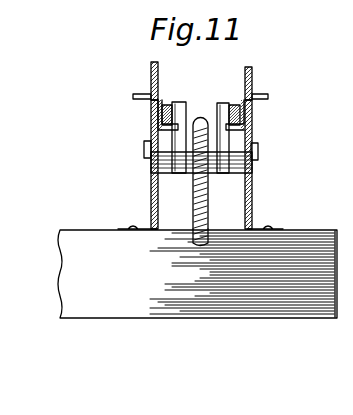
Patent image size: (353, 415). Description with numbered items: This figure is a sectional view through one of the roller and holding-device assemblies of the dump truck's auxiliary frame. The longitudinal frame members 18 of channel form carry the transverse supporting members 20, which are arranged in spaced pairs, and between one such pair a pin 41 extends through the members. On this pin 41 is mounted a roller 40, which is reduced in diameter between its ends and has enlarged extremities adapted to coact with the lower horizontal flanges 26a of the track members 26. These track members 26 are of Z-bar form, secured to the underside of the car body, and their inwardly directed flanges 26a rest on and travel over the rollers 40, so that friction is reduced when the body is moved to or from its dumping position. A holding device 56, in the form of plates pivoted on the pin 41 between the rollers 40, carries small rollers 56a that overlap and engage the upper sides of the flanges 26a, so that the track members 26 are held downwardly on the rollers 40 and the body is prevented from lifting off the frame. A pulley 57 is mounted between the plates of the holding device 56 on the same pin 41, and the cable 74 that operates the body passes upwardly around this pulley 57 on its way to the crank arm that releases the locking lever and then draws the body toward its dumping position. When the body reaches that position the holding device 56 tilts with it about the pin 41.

The longitudinal frame member 18 is at (63, 256).
The transverse supporting member 20 is at (150, 198).
The transverse track member 26 is at (151, 76).
The lower horizontal flange 26a is at (150, 133).
The pin 41 is at (144, 148).
The roller 40 is at (166, 177).
The holding device 56 is at (228, 103).
The small roller 56a is at (151, 103).
The pulley 57 is at (211, 178).
The cable 74 is at (196, 234).